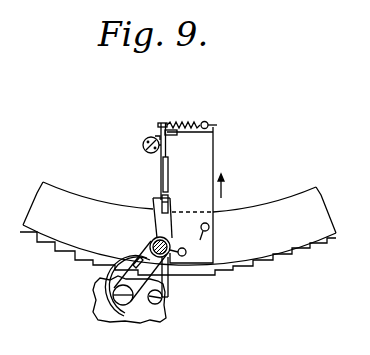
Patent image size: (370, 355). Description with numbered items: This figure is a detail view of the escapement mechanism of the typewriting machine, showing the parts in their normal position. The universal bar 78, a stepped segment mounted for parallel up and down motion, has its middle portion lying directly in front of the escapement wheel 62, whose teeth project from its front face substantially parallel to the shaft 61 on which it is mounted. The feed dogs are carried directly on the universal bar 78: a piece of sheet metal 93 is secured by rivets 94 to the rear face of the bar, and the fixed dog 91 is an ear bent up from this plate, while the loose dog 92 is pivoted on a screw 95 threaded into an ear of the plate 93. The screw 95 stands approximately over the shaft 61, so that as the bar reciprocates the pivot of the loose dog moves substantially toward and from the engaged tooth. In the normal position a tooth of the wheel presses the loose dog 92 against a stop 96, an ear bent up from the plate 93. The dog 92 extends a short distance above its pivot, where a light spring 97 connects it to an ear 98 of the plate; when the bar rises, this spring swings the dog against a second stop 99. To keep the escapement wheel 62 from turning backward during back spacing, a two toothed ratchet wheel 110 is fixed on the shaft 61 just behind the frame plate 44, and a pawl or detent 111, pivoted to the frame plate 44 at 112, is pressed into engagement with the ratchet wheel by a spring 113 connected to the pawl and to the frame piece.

The frame plate 44 is at (162, 314).
The shaft 61 is at (168, 241).
The escapement wheel 62 is at (168, 287).
The universal bar 78 is at (179, 223).
The fixed dog 91 is at (168, 206).
The loose dog 92 is at (161, 165).
The sheet metal plate 93 is at (213, 162).
The rivets 94 is at (186, 252).
The screw 95 is at (150, 137).
The stop 96 is at (168, 181).
The light spring 97 is at (185, 122).
The ear 98 is at (218, 126).
The stop 99 is at (177, 141).
The two toothed ratchet wheel 110 is at (131, 248).
The pawl or detent 111 is at (136, 262).
The pivot 112 is at (123, 306).
The spring 113 is at (113, 273).